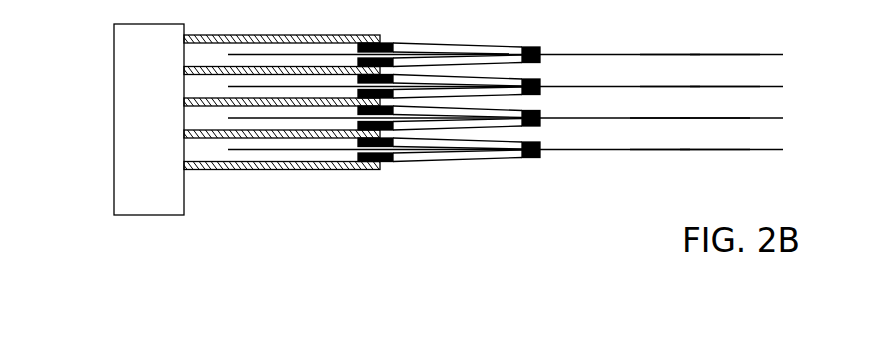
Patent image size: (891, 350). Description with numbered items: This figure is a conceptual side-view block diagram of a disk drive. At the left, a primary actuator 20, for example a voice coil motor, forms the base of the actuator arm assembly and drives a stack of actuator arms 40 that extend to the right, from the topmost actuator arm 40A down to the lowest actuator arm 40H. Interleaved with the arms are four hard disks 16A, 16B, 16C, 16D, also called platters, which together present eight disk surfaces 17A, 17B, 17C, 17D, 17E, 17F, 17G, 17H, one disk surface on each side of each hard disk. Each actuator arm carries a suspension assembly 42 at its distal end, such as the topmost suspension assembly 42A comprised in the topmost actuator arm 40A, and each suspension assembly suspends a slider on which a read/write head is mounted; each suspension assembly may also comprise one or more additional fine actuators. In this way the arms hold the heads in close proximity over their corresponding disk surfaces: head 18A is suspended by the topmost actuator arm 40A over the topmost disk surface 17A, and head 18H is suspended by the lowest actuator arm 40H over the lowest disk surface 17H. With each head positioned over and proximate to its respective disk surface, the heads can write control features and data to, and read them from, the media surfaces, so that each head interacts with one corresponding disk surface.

The primary actuator 20 is at (114, 57).
The hard disk 16A is at (800, 54).
The hard disk 16B is at (800, 86).
The hard disk 16C is at (800, 118).
The hard disk 16D is at (800, 150).
The disk surface 17A is at (697, 54).
The disk surface 17B is at (682, 55).
The disk surface 17C is at (697, 86).
The disk surface 17D is at (682, 87).
The disk surface 17E is at (683, 118).
The disk surface 17F is at (668, 119).
The disk surface 17G is at (683, 149).
The disk surface 17H is at (668, 150).
The actuator arms 40 is at (288, 125).
The topmost actuator arm 40A is at (300, 35).
The lowest actuator arm 40H is at (247, 170).
The suspension assembly 42 is at (470, 126).
The topmost suspension assembly 42A is at (478, 33).
The head 18A is at (548, 42).
The head 18H is at (548, 161).